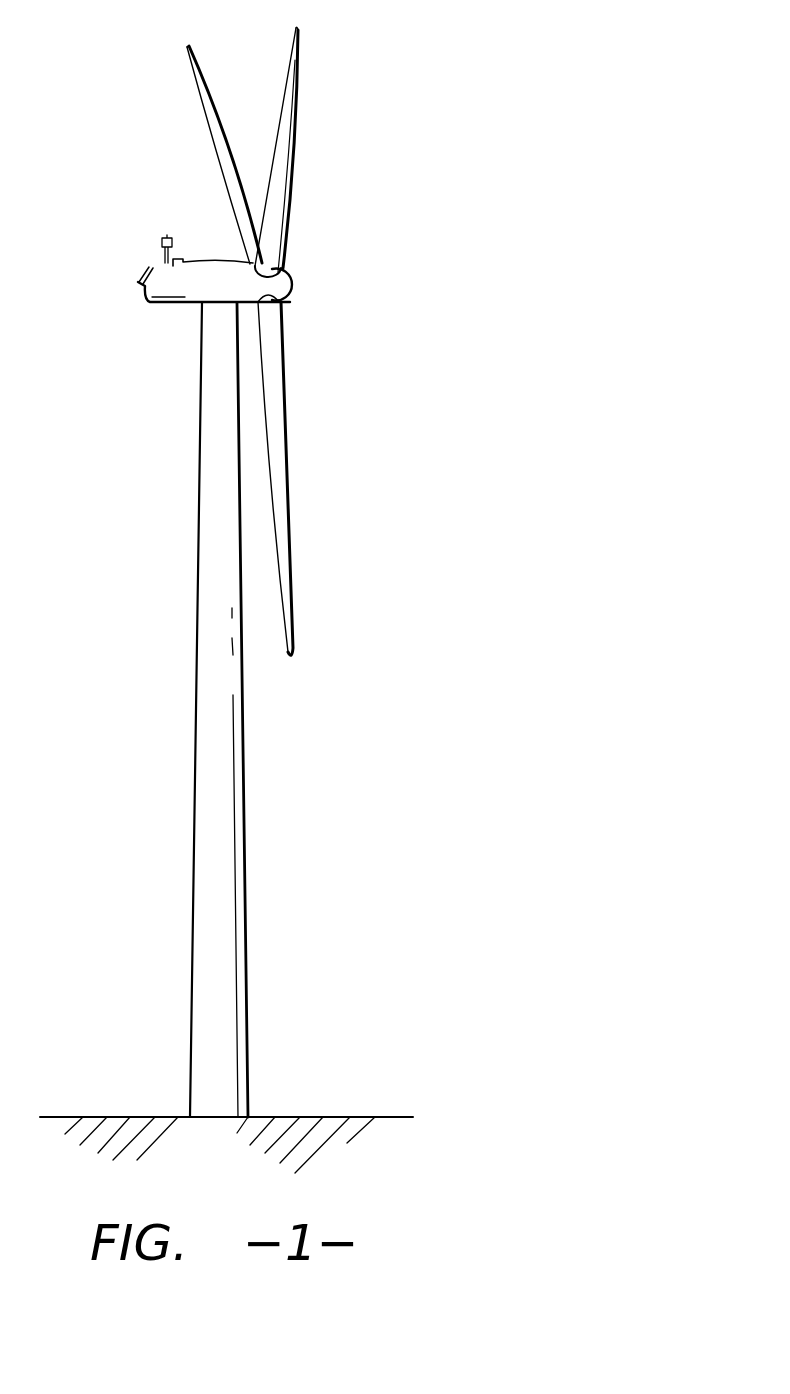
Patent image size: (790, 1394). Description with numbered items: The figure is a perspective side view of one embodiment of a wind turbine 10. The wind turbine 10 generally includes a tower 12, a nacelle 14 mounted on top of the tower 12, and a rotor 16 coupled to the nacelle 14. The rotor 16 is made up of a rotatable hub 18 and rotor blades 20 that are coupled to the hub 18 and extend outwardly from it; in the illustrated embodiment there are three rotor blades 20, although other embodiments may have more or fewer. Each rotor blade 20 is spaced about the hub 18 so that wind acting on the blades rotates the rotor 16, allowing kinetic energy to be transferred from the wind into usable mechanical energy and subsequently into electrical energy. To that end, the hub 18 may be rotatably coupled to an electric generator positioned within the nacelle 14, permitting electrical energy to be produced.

The wind turbine 10 is at (392, 104).
The tower 12 is at (205, 822).
The nacelle 14 is at (179, 305).
The rotor 16 is at (299, 260).
The rotatable hub 18 is at (292, 287).
The rotor blade 20 is at (287, 67).